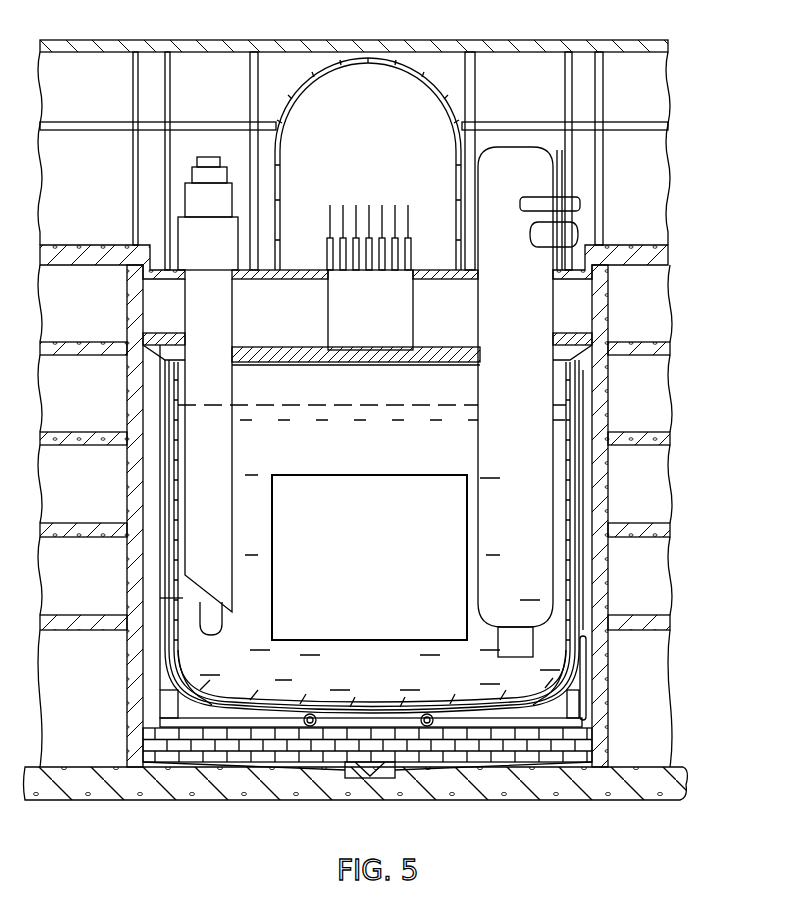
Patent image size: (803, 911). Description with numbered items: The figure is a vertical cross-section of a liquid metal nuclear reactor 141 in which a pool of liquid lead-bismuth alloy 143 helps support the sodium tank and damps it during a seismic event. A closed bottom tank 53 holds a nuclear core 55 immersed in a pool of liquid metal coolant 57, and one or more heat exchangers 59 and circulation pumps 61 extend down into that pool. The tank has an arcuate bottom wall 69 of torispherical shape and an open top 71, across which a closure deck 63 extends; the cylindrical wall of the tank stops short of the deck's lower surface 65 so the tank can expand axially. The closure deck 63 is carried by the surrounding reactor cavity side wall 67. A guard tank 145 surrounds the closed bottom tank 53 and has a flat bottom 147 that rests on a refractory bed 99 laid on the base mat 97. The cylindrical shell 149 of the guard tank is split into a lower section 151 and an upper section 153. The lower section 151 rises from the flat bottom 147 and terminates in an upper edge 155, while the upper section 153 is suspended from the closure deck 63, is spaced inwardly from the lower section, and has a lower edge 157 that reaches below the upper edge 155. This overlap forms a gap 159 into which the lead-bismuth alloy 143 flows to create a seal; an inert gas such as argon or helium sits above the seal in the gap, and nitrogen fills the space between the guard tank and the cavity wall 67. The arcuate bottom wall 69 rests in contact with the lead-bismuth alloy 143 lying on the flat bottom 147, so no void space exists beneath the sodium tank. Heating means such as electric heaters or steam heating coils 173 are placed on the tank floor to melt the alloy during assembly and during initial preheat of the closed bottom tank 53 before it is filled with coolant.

The liquid metal nuclear reactor 141 is at (524, 34).
The reactor cavity side wall 67 is at (128, 383).
The upper edge 155 is at (128, 628).
The base mat 97 is at (211, 788).
The lower surface 65 is at (443, 365).
The closure deck 63 is at (444, 350).
The closed bottom tank 53 is at (572, 480).
The upper section 153 is at (168, 472).
The arcuate bottom wall 69 is at (386, 698).
The lower edge 157 is at (180, 650).
The lower section 151 is at (160, 657).
The guard tank 145 is at (588, 604).
The cylindrical shell 149 is at (576, 546).
The liquid lead-bismuth alloy 143 is at (500, 712).
The flat bottom 147 is at (470, 725).
The refractory bed 99 is at (283, 766).
The steam heating coils 173 is at (306, 713).
The liquid metal coolant 57 is at (374, 456).
The open top 71 is at (248, 382).
The nuclear core 55 is at (375, 564).
The circulation pump 61 is at (220, 447).
The gap 159 is at (185, 598).
The heat exchanger 59 is at (527, 463).